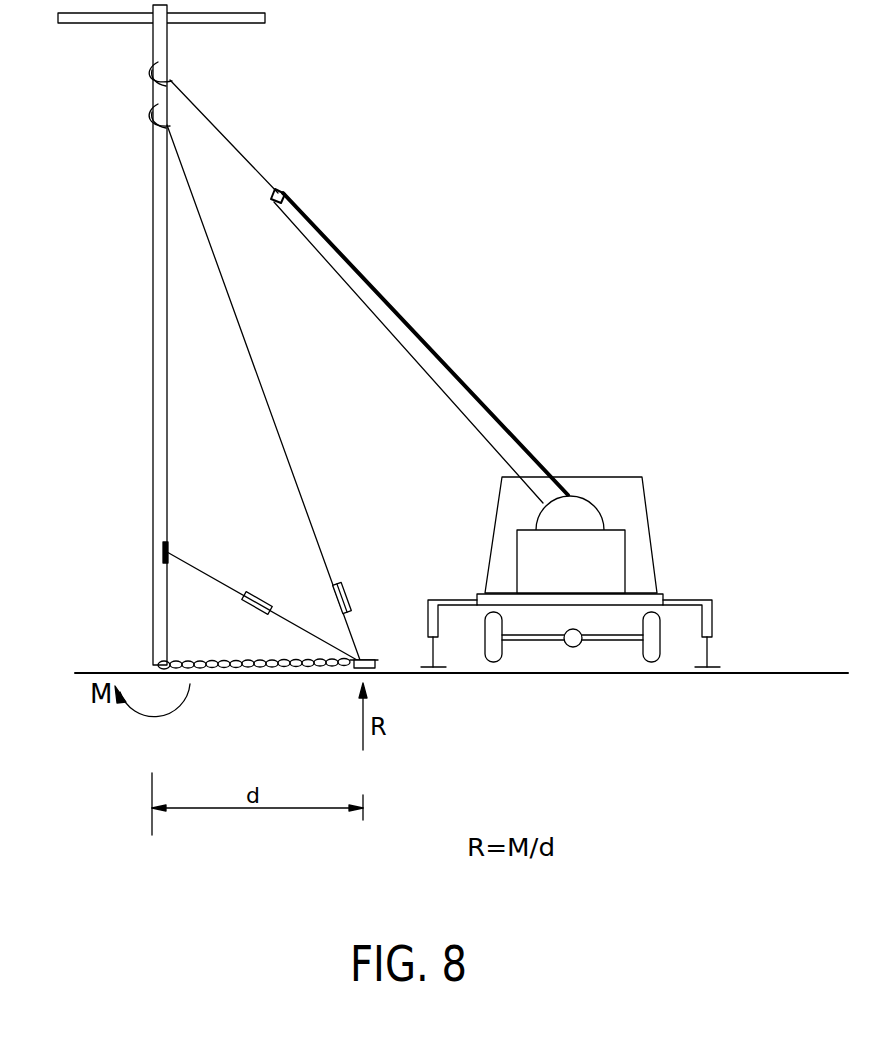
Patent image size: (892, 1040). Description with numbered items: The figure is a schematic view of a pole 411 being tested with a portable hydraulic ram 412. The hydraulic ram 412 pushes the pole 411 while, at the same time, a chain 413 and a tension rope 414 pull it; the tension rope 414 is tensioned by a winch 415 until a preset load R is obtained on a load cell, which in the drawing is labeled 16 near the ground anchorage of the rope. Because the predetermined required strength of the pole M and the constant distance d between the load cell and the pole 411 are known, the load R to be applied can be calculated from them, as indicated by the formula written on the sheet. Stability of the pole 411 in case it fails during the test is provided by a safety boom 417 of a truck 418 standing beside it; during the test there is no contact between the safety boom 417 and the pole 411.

The pole 411 is at (160, 322).
The hydraulic ram 412 is at (250, 607).
The chain 413 is at (197, 676).
The tension rope 414 is at (268, 385).
The winch 415 is at (345, 586).
The ground anchor 16 is at (370, 670).
The safety boom 417 is at (347, 266).
The truck 418 is at (640, 517).